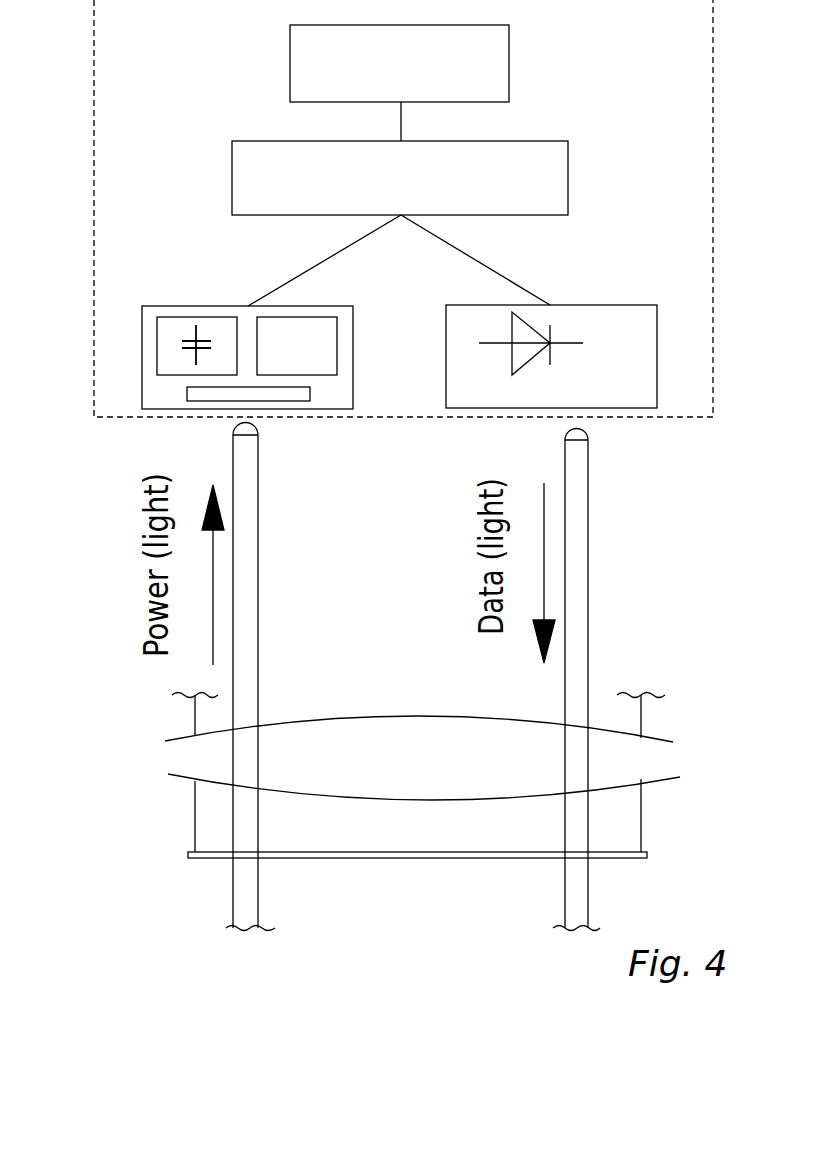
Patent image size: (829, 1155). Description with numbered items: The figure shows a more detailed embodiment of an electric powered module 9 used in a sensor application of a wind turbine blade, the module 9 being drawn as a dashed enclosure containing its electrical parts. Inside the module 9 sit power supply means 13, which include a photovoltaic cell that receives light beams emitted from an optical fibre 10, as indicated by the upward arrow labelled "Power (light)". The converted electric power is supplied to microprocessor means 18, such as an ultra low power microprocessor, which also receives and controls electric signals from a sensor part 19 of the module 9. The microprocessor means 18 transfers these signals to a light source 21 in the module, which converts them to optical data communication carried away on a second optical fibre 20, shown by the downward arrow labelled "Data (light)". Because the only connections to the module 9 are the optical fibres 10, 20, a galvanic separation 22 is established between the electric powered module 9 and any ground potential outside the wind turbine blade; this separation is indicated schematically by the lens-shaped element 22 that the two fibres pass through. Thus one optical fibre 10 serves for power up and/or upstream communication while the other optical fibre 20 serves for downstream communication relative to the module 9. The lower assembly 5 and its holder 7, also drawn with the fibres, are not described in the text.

The tooth implant / sensor device 5 is at (153, 832).
The holder / mounting 7 is at (618, 822).
The electric powered module 9 is at (128, 434).
The optical fibre 10 is at (252, 572).
The power supply means 13 is at (150, 373).
The microprocessor means 18 is at (547, 185).
The sensor part 19 is at (491, 62).
The optical fibre 20 is at (583, 572).
The light source 21 is at (628, 368).
The galvanic separation 22 is at (623, 757).